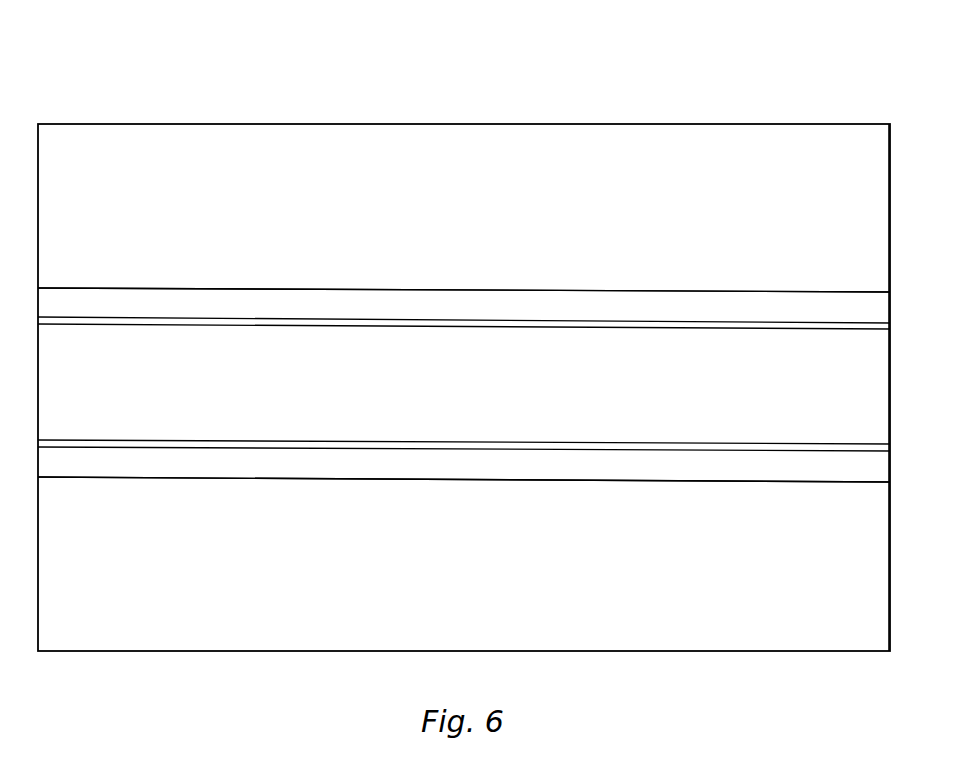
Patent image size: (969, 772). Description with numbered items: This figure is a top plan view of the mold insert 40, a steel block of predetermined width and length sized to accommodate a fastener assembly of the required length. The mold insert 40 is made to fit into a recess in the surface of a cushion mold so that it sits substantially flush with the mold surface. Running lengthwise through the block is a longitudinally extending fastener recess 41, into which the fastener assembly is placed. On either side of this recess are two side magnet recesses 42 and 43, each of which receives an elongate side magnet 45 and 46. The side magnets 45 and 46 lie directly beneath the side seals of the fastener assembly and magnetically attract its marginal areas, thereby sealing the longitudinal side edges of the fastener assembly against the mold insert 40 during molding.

The mold insert 40 is at (465, 112).
The fastener recess 41 is at (337, 326).
The side magnet recess 42 is at (485, 290).
The side magnet recess 43 is at (445, 479).
The side magnet 45 is at (176, 465).
The side magnet 46 is at (233, 306).